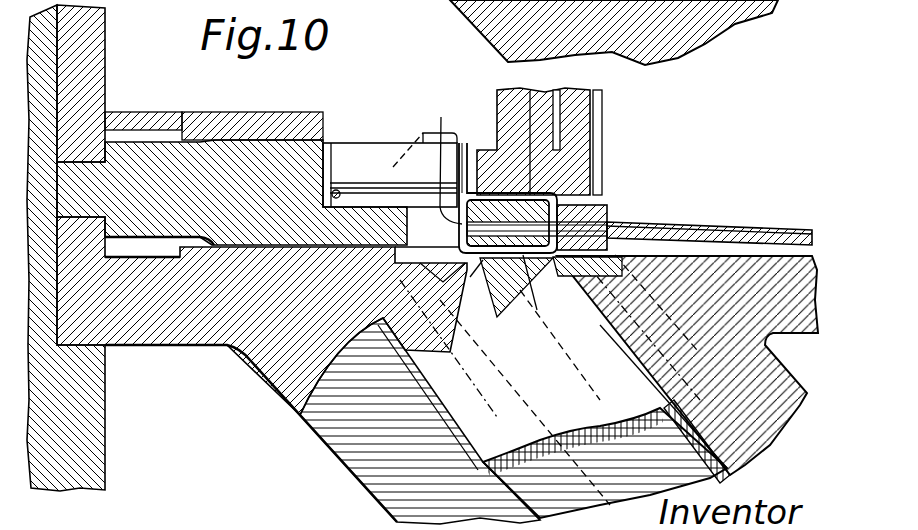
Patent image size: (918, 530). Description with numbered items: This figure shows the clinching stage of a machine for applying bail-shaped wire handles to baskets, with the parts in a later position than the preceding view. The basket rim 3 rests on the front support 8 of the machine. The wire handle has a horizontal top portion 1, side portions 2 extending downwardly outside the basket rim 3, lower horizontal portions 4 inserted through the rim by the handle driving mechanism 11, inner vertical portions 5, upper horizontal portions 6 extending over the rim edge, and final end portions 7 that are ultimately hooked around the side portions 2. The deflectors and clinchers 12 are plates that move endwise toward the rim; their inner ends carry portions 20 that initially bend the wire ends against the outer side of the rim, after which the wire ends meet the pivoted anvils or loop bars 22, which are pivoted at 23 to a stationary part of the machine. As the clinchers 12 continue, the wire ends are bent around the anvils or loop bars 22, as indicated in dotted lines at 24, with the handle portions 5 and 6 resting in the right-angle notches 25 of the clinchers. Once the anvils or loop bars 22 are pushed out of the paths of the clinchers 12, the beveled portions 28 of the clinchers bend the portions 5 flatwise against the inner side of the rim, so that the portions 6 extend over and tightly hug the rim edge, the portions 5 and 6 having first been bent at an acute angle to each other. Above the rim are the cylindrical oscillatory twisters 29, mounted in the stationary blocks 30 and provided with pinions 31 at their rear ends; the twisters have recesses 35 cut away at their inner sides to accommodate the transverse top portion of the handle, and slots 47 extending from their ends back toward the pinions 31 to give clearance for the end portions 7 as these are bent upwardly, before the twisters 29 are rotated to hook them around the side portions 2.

The horizontal top portion 1 is at (339, 190).
The side portions 2 is at (386, 188).
The basket rim 3 is at (603, 215).
The lower horizontal portions 4 is at (574, 203).
The inner vertical portions 5 is at (519, 254).
The upper horizontal portions 6 is at (451, 160).
The final end portions 7 is at (429, 200).
The front support 8 is at (786, 275).
The handle driving mechanism 11 is at (517, 150).
The deflectors and clinchers 12 is at (376, 478).
The portions 20 is at (296, 410).
The pivoted anvils or loop bars 22 is at (548, 330).
The pivot 23 is at (568, 495).
The dotted-line wire position 24 is at (312, 462).
The right-angle notches 25 is at (462, 290).
The beveled portions 28 is at (539, 294).
The twisters 29 is at (233, 150).
The stationary blocks 30 is at (186, 136).
The pinions 31 is at (126, 136).
The recesses 35 is at (393, 150).
The slots 47 is at (400, 267).